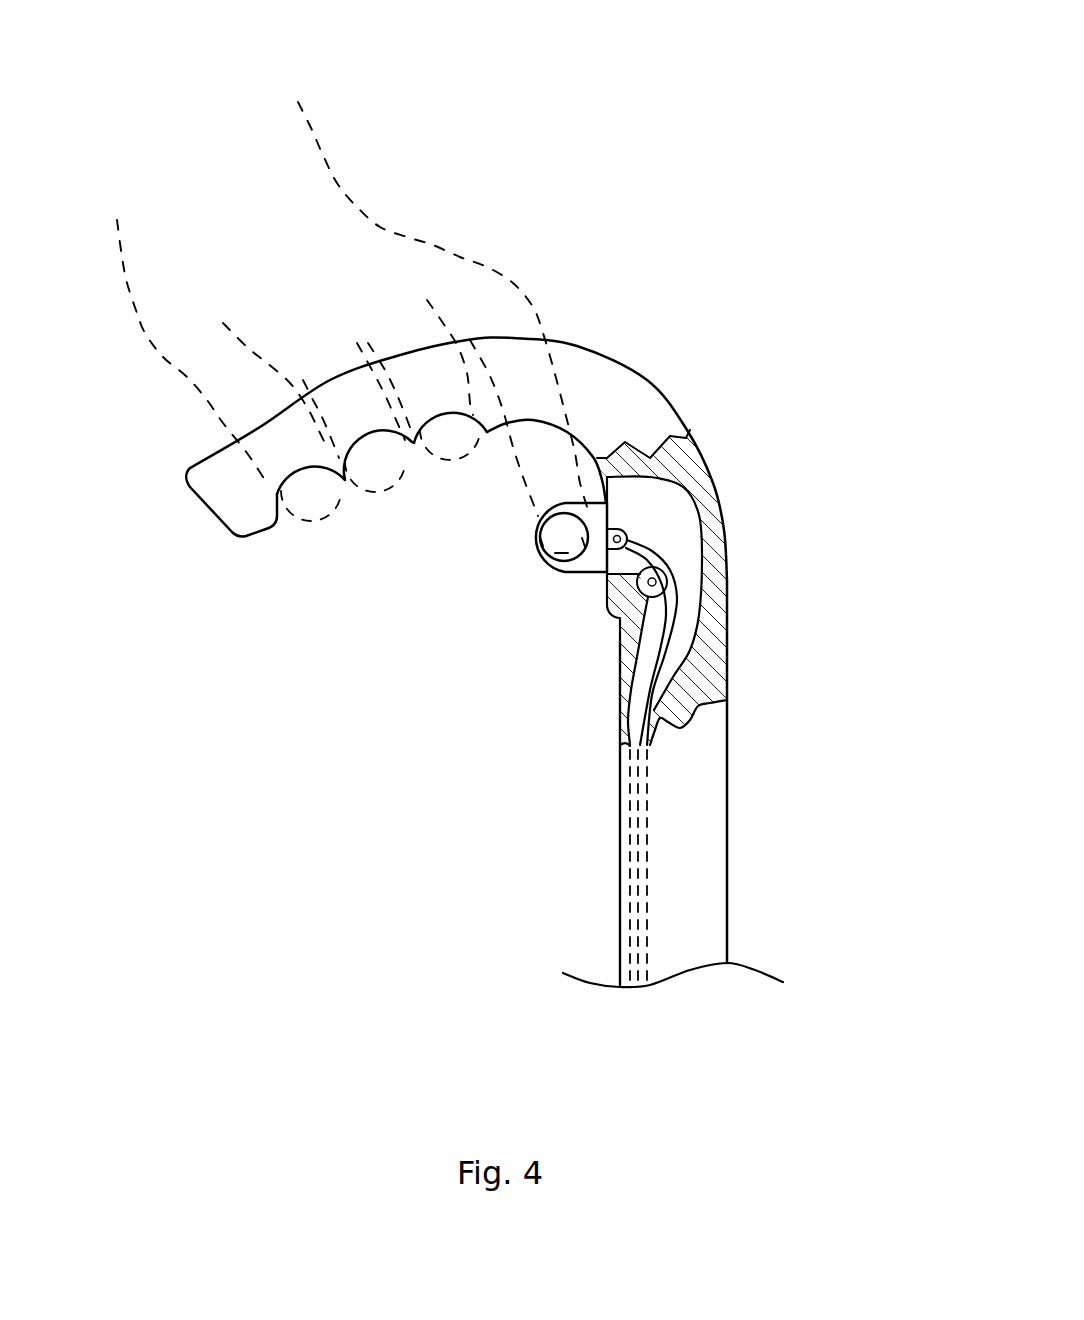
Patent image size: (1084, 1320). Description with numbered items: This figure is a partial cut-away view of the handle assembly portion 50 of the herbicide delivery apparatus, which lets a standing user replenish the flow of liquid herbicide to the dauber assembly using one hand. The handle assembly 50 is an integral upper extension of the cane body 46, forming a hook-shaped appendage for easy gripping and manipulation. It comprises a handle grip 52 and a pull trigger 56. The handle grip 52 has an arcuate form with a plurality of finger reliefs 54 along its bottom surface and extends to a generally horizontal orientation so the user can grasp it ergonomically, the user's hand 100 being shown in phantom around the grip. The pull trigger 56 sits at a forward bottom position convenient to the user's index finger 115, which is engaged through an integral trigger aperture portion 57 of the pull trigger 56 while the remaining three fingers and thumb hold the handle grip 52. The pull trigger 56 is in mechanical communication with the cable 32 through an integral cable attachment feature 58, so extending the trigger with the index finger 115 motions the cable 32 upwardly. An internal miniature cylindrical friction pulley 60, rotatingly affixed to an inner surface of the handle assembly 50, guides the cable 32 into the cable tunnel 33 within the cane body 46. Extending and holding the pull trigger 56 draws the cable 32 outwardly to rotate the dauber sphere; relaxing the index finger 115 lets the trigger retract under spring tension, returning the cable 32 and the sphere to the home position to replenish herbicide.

The handle assembly portion 50 is at (735, 134).
The handle grip 52 is at (581, 347).
The finger reliefs 54 is at (427, 419).
The pull trigger 56 is at (543, 565).
The trigger aperture portion 57 is at (563, 562).
The cable attachment feature 58 is at (625, 530).
The friction pulley 60 is at (657, 578).
The cable 32 is at (637, 783).
The cable tunnel 33 is at (630, 787).
The cane body 46 is at (728, 910).
The hand 100 is at (327, 163).
The index finger 115 is at (560, 396).